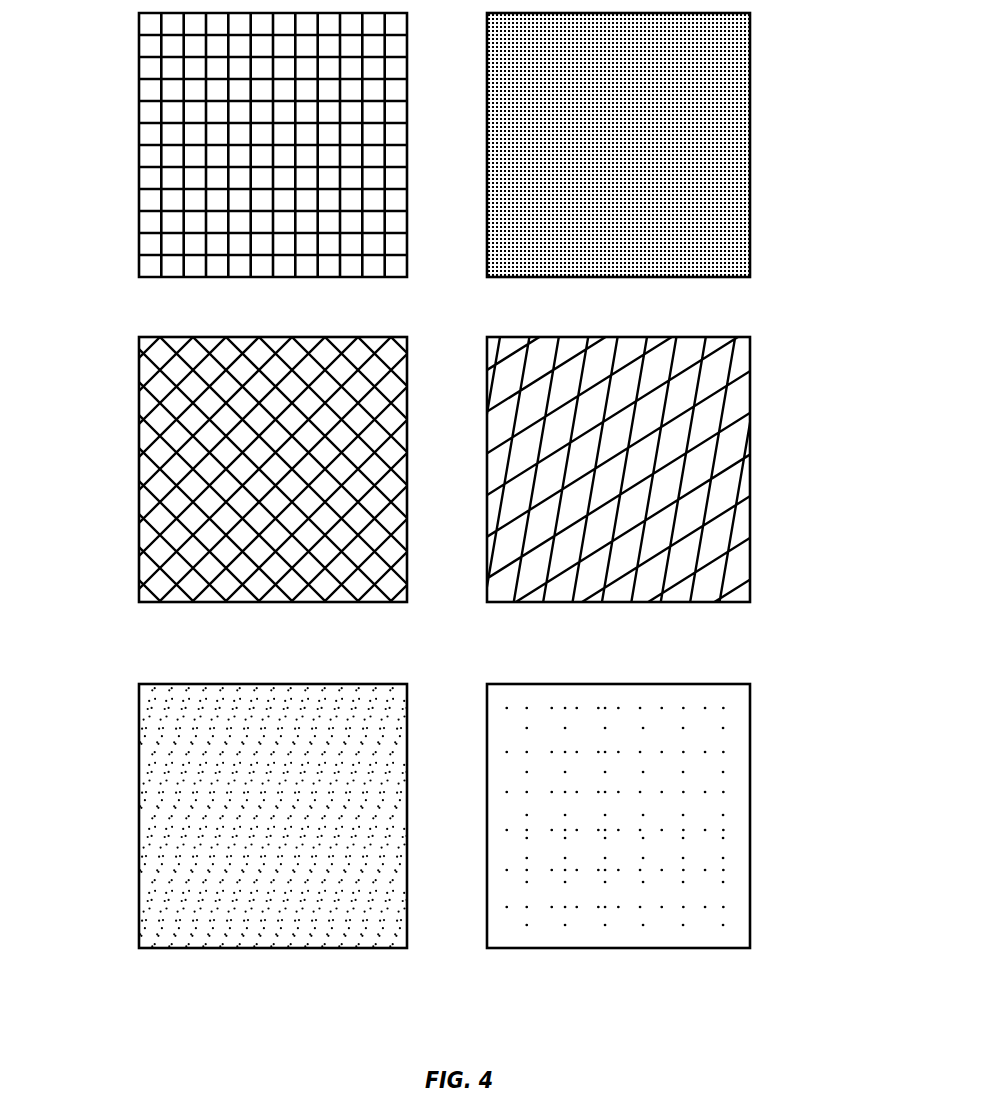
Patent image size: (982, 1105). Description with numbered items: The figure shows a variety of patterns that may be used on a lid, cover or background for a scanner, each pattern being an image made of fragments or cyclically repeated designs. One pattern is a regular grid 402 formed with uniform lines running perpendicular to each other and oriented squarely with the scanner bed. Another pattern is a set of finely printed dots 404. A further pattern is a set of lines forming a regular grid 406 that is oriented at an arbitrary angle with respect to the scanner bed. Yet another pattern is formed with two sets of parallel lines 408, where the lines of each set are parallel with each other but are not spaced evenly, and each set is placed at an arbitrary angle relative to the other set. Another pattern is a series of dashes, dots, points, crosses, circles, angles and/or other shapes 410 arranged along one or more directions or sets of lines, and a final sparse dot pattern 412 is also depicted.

The regular grid 402 is at (139, 132).
The finely printed dots 404 is at (752, 155).
The regular grid oriented at an arbitrary angle 406 is at (139, 463).
The two sets of parallel lines 408 is at (750, 436).
The series of dashes, dots, points, crosses, circles, angles and/or other shapes 410 is at (139, 783).
The sixth pattern (dot array) 412 is at (750, 760).